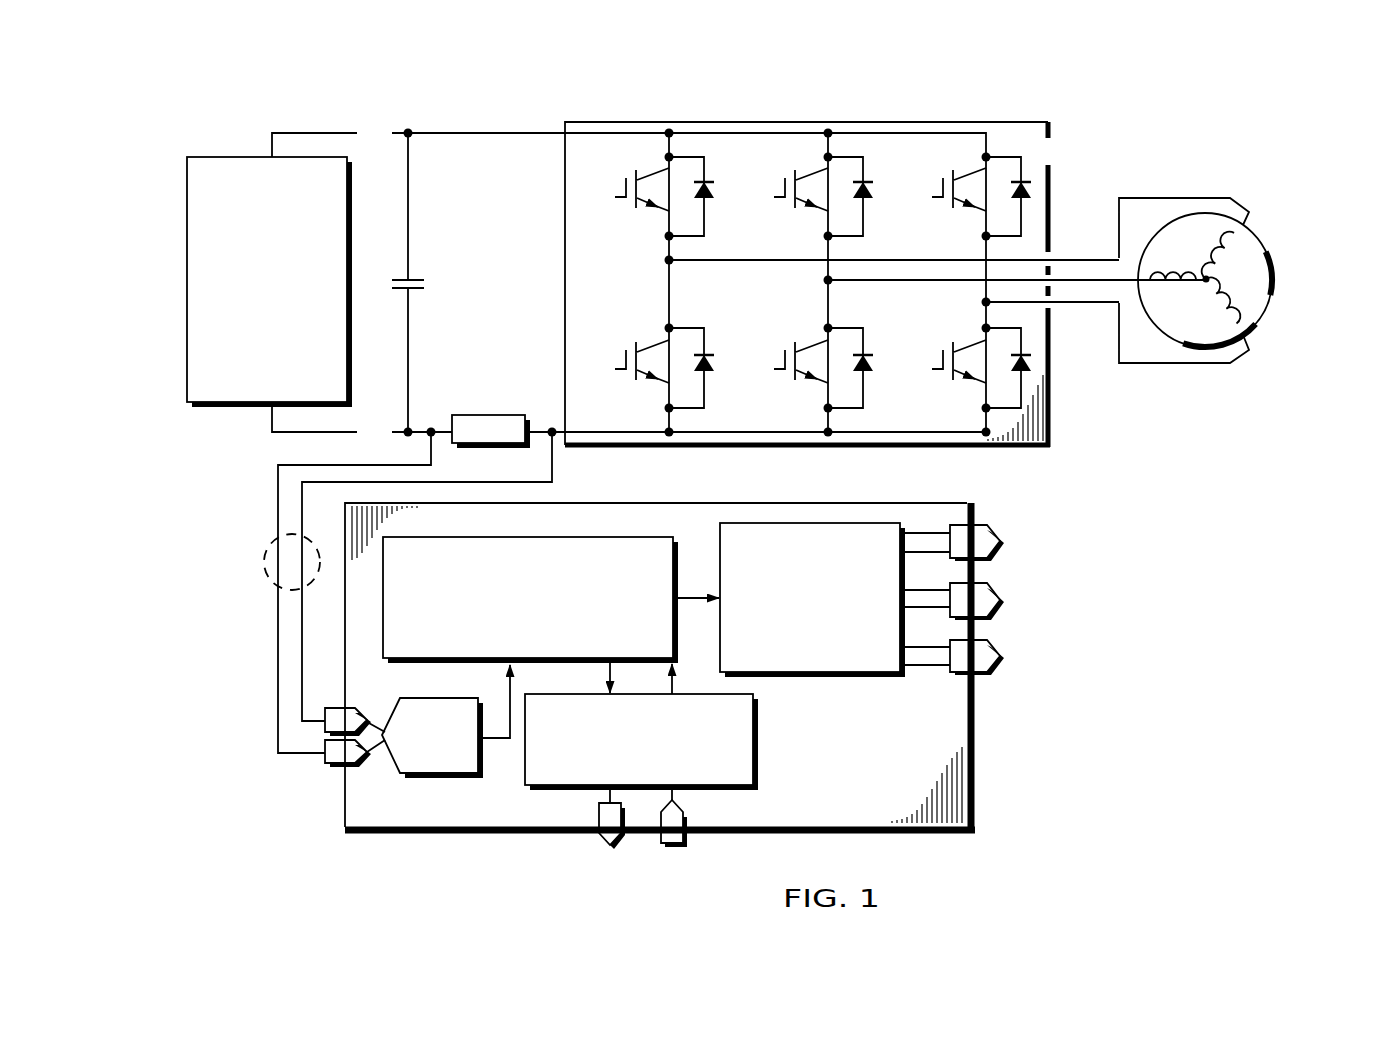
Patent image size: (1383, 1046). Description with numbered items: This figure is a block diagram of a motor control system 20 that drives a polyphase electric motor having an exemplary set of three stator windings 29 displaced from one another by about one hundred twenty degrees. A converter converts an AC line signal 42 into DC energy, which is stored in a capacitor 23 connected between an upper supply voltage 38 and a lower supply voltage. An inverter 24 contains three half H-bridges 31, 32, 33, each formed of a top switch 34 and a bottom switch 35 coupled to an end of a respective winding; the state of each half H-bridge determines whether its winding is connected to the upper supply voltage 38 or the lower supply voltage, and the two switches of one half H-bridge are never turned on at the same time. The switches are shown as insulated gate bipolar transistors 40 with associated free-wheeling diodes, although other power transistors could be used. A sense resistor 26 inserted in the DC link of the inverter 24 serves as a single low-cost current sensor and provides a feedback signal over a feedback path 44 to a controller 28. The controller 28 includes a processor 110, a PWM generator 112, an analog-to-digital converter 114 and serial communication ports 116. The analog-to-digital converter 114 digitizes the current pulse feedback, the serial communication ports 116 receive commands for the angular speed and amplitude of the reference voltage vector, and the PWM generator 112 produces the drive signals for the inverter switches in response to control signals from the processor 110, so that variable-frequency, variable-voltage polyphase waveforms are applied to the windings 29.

The motor control system 20 is at (1160, 549).
The capacitor 23 is at (422, 275).
The inverter 24 is at (1058, 421).
The sense resistor 26 is at (478, 414).
The controller 28 is at (978, 738).
The stator windings 29 is at (1245, 305).
The half H-bridge 31 is at (683, 244).
The half H-bridge 32 is at (886, 166).
The half H-bridge 33 is at (1044, 166).
The top switch 34 is at (643, 220).
The bottom switch 35 is at (642, 334).
The upper supply voltage 38 is at (629, 139).
The insulated gate bipolar transistor 40 is at (712, 200).
The AC line signal 42 is at (186, 283).
The feedback path 44 is at (266, 571).
The processor 110 is at (548, 537).
The PWM generator 112 is at (825, 676).
The analog-to-digital converter 114 is at (433, 776).
The serial communication ports 116 is at (728, 788).